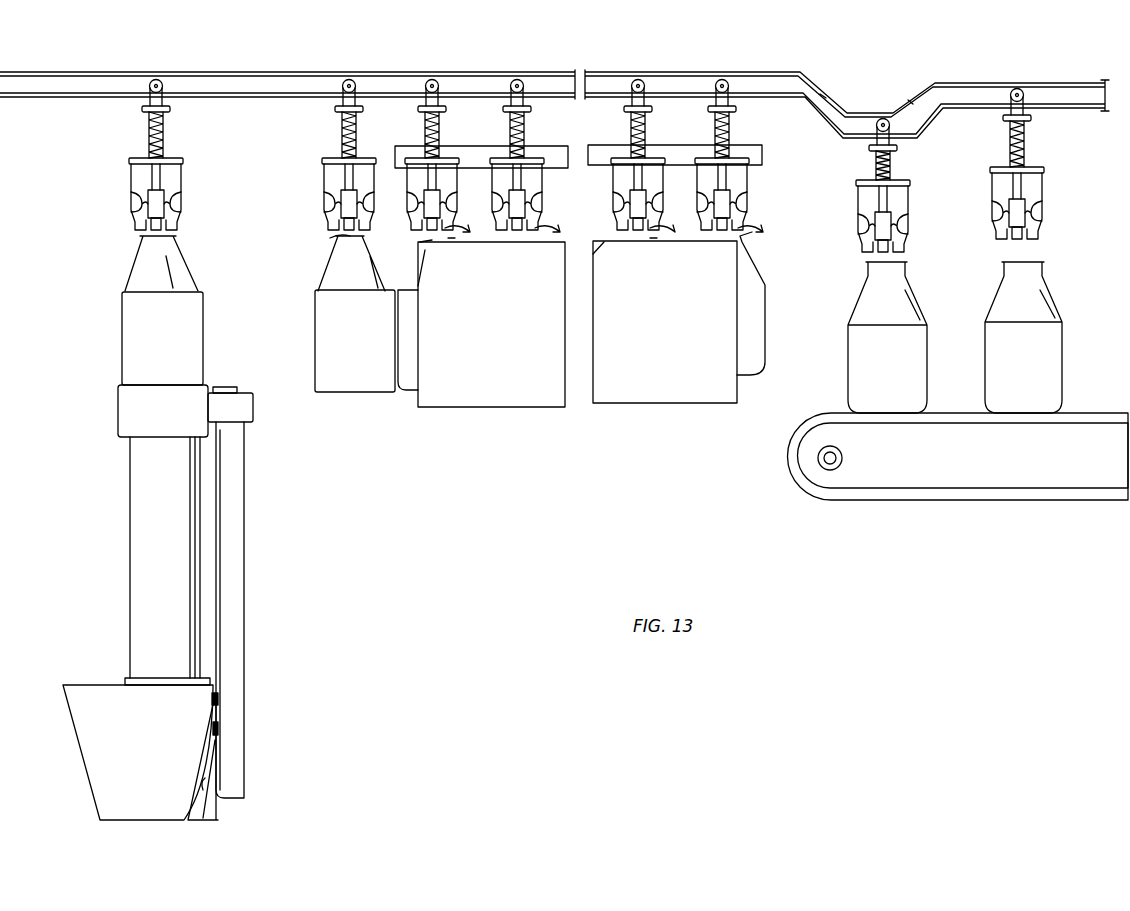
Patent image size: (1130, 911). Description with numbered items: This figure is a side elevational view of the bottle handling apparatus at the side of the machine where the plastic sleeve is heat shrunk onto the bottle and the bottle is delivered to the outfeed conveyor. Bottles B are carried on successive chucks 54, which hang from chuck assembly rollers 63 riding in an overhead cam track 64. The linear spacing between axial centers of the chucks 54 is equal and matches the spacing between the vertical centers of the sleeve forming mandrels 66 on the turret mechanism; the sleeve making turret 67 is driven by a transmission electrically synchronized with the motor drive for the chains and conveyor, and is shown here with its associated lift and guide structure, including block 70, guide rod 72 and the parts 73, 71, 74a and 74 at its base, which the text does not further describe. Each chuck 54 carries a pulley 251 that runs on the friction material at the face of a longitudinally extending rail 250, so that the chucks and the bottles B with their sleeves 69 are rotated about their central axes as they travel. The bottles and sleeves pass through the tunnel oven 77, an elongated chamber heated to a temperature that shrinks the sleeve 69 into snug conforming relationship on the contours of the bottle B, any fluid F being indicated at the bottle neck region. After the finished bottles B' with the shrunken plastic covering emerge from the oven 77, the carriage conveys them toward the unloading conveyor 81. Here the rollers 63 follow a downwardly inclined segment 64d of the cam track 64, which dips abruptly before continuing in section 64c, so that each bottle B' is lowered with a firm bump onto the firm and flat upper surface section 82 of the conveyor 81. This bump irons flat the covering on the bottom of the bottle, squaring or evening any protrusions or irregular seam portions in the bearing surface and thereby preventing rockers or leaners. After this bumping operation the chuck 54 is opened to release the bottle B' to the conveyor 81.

The cam track 64 is at (247, 76).
The downwardly inclined segment of the cam track 64d is at (825, 93).
The cam track section 64c is at (912, 102).
The chuck assembly rollers 63 is at (879, 118).
The chucks 54 is at (195, 185).
The pulley 251 is at (455, 165).
The rail 250 is at (762, 150).
The bottle B is at (255, 263).
The finished bottle B' is at (907, 322).
The fluid F is at (330, 236).
The sleeve 69 is at (174, 332).
The lift block 70 is at (120, 405).
The sleeve forming mandrels 66 is at (130, 508).
The guide rod 72 is at (244, 508).
The sleeve making turret 67 is at (149, 737).
The stop 73 is at (217, 698).
The latch 71 is at (213, 730).
The ramp plate portion 74a is at (207, 782).
The ramp plate 74 is at (218, 810).
The tunnel oven 77 is at (499, 332).
The upper surface section of conveyor 82 is at (946, 412).
The unloading conveyor 81 is at (782, 457).